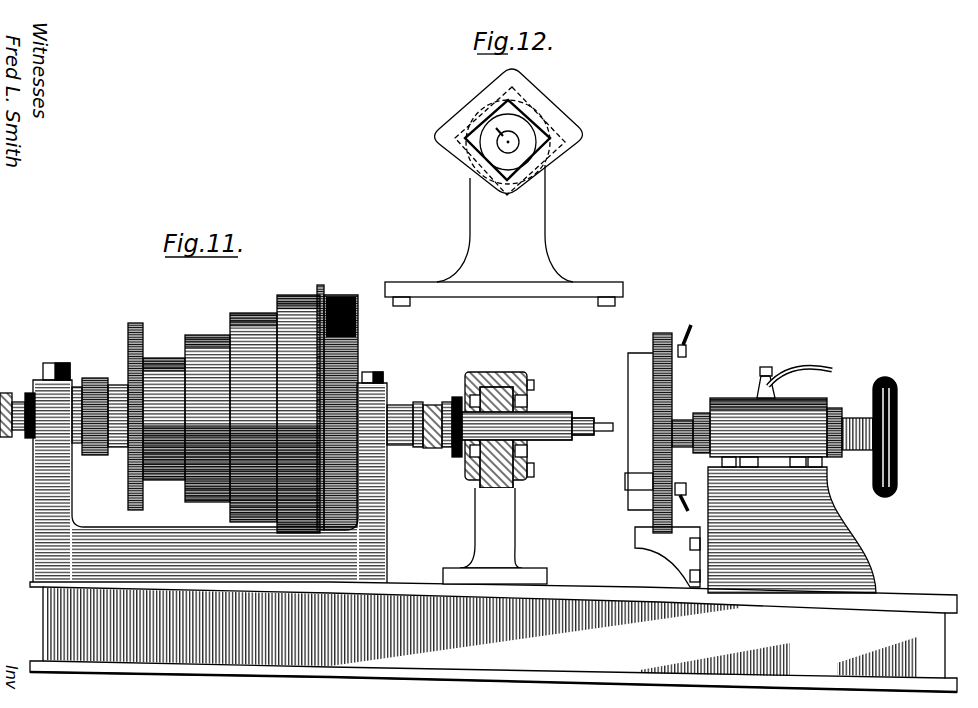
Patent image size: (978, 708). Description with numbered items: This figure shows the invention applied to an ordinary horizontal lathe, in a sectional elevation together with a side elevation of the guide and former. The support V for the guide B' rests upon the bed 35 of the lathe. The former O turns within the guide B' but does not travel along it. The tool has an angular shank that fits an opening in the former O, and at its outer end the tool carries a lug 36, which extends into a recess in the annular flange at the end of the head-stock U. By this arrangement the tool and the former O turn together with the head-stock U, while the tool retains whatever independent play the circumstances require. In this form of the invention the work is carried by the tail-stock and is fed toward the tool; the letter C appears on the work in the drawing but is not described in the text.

In FIG. 11, the lathe bed 35 is at (588, 593).
In FIG. 11, the clamping nut / adjusting member 36 is at (450, 400).
In FIG. 12, the clamping nut / adjusting member 36 is at (496, 128).
In FIG. 11, the spindle U is at (403, 404).
In FIG. 11, the steady rest head B' is at (496, 417).
In FIG. 12, the steady rest head B' is at (519, 131).
In FIG. 11, the bearing block O is at (528, 402).
In FIG. 12, the bearing block O is at (511, 102).
In FIG. 11, the steady rest standard V is at (515, 525).
In FIG. 12, the steady rest standard V is at (538, 227).
In FIG. 11, the work shaft C is at (537, 426).